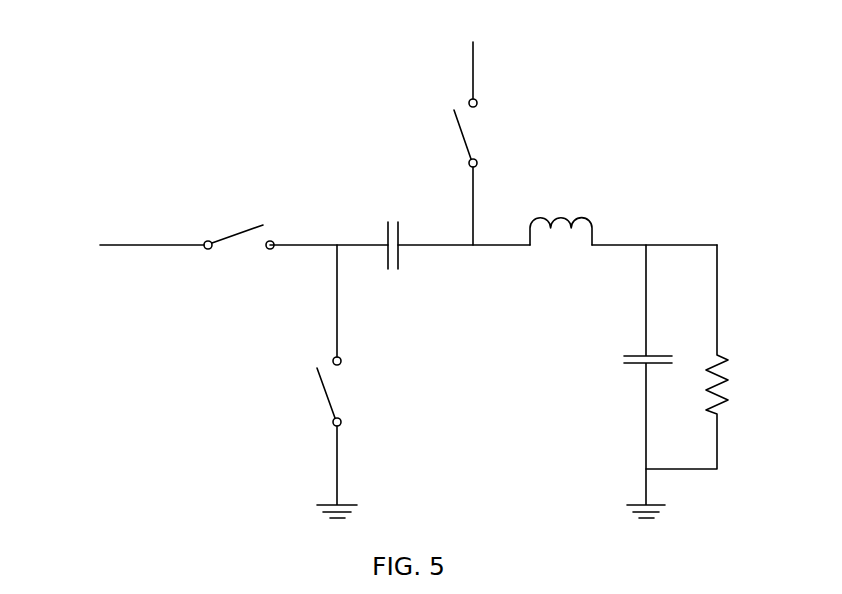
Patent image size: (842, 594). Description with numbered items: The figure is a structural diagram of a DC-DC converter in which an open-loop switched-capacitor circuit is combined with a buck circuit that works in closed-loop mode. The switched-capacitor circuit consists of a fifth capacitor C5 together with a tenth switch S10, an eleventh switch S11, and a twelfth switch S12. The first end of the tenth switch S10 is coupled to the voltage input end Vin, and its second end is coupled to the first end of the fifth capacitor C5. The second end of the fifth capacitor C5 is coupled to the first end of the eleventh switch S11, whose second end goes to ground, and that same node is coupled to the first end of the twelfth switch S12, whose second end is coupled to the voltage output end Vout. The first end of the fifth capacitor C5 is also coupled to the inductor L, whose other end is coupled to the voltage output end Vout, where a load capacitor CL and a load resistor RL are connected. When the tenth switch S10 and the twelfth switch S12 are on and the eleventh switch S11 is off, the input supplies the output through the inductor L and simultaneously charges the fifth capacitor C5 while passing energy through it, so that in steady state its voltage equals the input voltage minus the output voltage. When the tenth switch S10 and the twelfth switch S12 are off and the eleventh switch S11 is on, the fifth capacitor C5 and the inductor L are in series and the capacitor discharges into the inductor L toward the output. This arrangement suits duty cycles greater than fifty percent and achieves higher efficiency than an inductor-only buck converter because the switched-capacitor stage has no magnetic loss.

The tenth switch S10 is at (489, 172).
The eleventh switch S11 is at (352, 381).
The twelfth switch S12 is at (239, 254).
The fifth capacitor C5 is at (387, 229).
The inductor L is at (561, 216).
The load capacitor CL is at (636, 381).
The load resistor RL is at (705, 357).
The voltage input end Vin is at (470, 55).
The voltage output end Vout is at (371, 237).